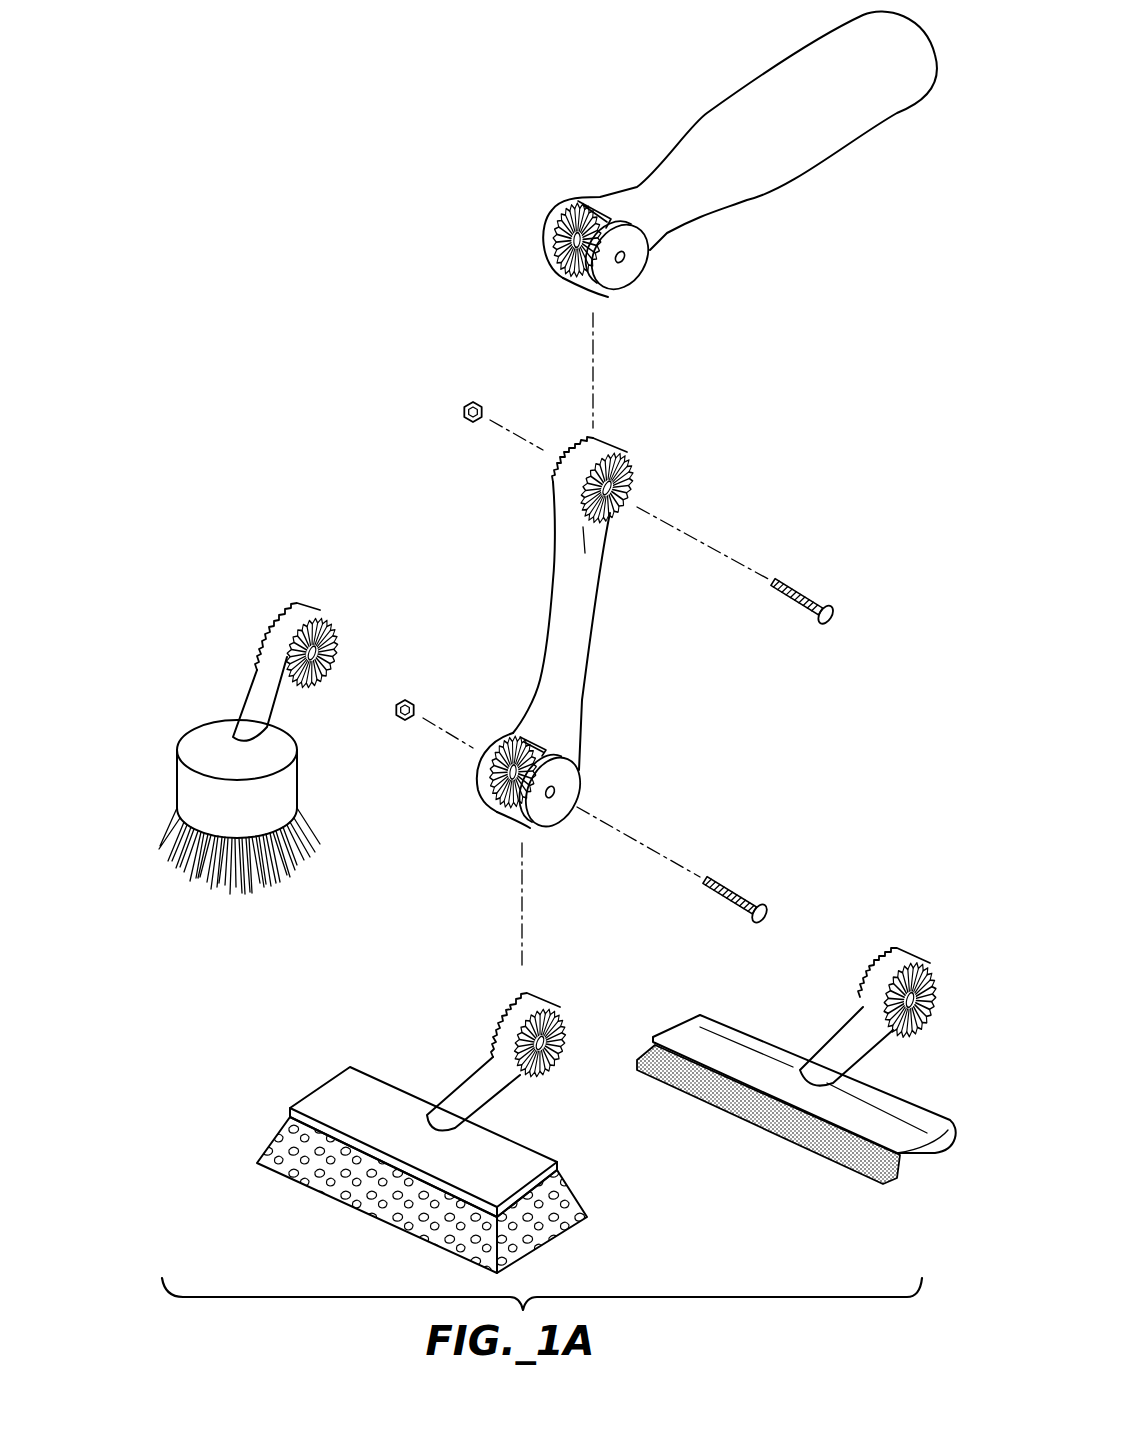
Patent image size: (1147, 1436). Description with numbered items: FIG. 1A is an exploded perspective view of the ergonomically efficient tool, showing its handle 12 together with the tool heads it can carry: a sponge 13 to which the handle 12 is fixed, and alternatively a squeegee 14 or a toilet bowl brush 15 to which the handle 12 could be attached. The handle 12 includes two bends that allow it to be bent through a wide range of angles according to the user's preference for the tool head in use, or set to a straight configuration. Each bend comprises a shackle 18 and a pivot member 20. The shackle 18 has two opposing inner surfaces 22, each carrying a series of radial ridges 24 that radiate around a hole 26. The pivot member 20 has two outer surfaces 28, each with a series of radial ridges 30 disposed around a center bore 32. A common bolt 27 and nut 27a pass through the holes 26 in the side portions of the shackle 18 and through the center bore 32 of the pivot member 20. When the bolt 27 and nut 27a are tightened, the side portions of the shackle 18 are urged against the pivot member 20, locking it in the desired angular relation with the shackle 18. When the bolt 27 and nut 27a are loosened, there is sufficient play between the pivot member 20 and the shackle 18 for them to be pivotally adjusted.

The handle 12 is at (713, 115).
The sponge 13 is at (523, 1145).
The squeegee 14 is at (893, 1097).
The toilet bowl brush 15 is at (300, 772).
The shackle 18 is at (620, 293).
The pivot member 20 is at (597, 447).
The inner surfaces 22 is at (580, 277).
The radial ridges 24 is at (563, 222).
The hole 26 is at (623, 260).
The bolt 27 is at (767, 903).
The nut 27a is at (410, 680).
The outer surfaces 28 is at (547, 1077).
The radial ridges 30 is at (633, 483).
The center bore 32 is at (580, 490).